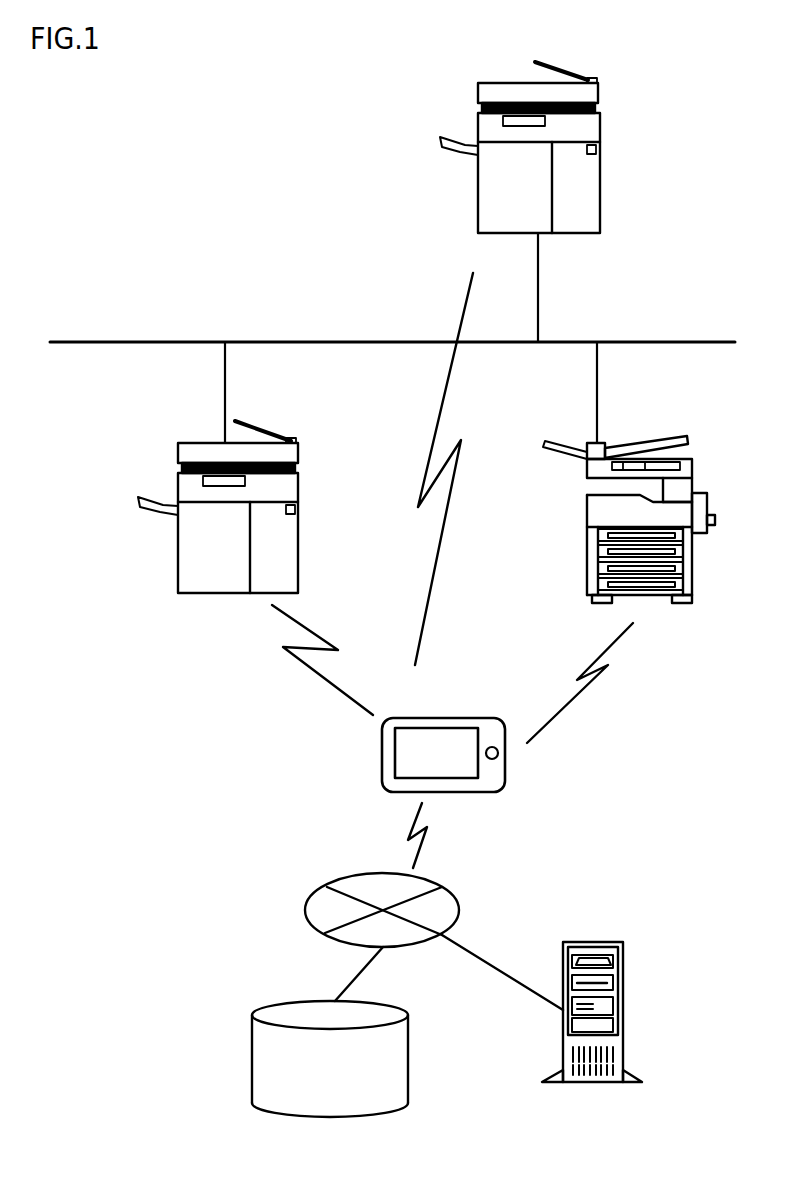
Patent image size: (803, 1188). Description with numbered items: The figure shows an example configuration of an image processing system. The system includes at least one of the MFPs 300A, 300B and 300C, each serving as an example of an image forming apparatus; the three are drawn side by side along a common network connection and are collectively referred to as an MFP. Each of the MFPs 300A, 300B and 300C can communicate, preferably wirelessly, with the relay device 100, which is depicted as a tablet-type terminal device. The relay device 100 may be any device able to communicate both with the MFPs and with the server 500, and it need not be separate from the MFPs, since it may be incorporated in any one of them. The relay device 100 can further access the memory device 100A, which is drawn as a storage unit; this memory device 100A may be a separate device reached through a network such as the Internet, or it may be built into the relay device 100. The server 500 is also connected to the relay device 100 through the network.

The relay device 100 is at (483, 718).
The memory device 100A is at (263, 1005).
The MFP 300A is at (488, 82).
The MFP 300B is at (182, 443).
The MFP 300C is at (692, 452).
The server 500 is at (607, 942).